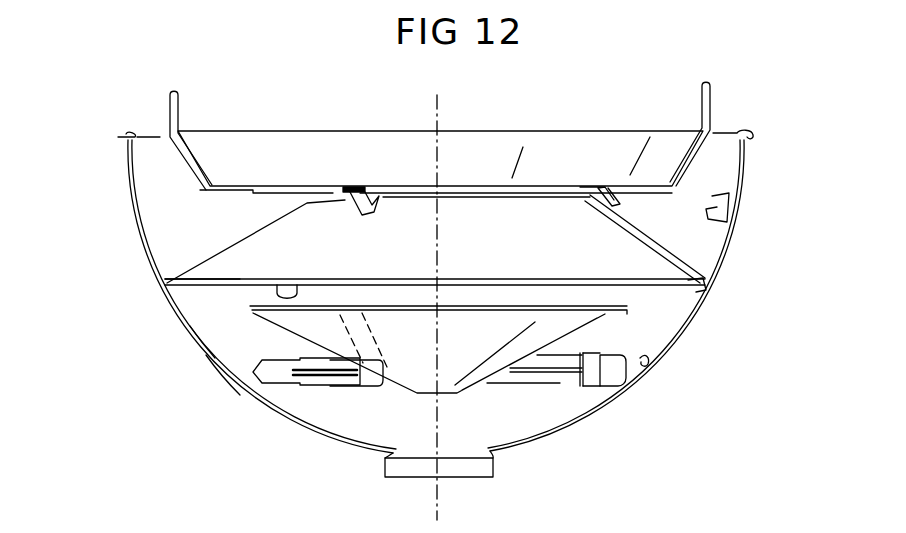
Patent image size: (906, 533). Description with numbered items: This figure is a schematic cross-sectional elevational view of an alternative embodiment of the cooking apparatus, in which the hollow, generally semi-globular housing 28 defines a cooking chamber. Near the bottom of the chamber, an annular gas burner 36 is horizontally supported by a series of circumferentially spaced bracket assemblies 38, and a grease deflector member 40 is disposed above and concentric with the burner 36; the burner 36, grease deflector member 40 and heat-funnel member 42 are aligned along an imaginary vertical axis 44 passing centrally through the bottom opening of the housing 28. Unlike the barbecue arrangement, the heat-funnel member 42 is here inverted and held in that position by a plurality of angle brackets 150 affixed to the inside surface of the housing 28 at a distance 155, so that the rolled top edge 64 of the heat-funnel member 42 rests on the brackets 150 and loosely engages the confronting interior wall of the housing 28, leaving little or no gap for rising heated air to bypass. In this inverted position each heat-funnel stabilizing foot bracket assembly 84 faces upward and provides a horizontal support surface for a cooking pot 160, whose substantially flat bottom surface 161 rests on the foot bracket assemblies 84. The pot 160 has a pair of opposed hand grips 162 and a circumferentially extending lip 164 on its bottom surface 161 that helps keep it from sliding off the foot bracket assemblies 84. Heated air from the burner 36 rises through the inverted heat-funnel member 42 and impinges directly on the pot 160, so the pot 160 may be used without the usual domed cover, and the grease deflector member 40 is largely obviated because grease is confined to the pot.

The housing 28 is at (727, 265).
The gas burner 36 is at (565, 388).
The bracket assembly 38 is at (347, 388).
The grease deflector member 40 is at (212, 390).
The heat-funnel member 42 is at (230, 258).
The imaginary vertical axis 44 is at (432, 430).
The top edge 64 is at (230, 280).
The heat-funnel stabilizing foot bracket assembly 84 is at (365, 185).
The angle bracket 150 is at (232, 328).
The distance 155 is at (72, 137).
The cooking pot 160 is at (545, 156).
The bottom surface 161 is at (222, 188).
The hand grip 162 is at (168, 100).
The lip 164 is at (490, 195).